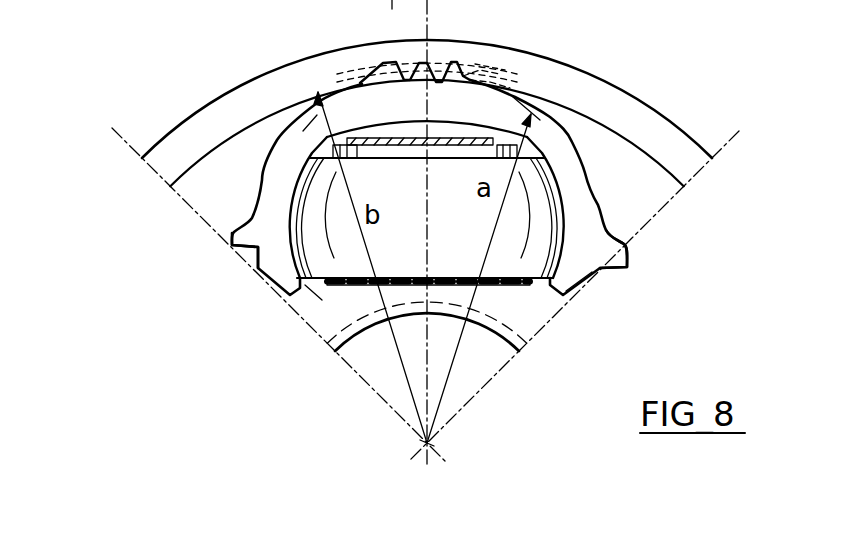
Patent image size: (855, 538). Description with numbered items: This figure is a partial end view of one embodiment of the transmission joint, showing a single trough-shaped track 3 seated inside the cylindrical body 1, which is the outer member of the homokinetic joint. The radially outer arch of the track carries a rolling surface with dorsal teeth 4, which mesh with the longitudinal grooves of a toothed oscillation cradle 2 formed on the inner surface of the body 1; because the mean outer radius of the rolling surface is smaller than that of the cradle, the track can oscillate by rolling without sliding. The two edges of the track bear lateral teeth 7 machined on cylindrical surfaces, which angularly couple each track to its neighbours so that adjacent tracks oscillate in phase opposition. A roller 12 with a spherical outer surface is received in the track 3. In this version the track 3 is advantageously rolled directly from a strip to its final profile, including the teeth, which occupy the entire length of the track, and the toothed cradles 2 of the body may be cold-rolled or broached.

The cylindrical body 1 is at (653, 123).
The oscillation cradles 2 is at (407, 62).
The trough-shaped track 3 is at (574, 183).
The rolling surface with dorsal teeth 4 is at (475, 63).
The lateral teeth 7 is at (248, 232).
The roller 12 is at (538, 230).